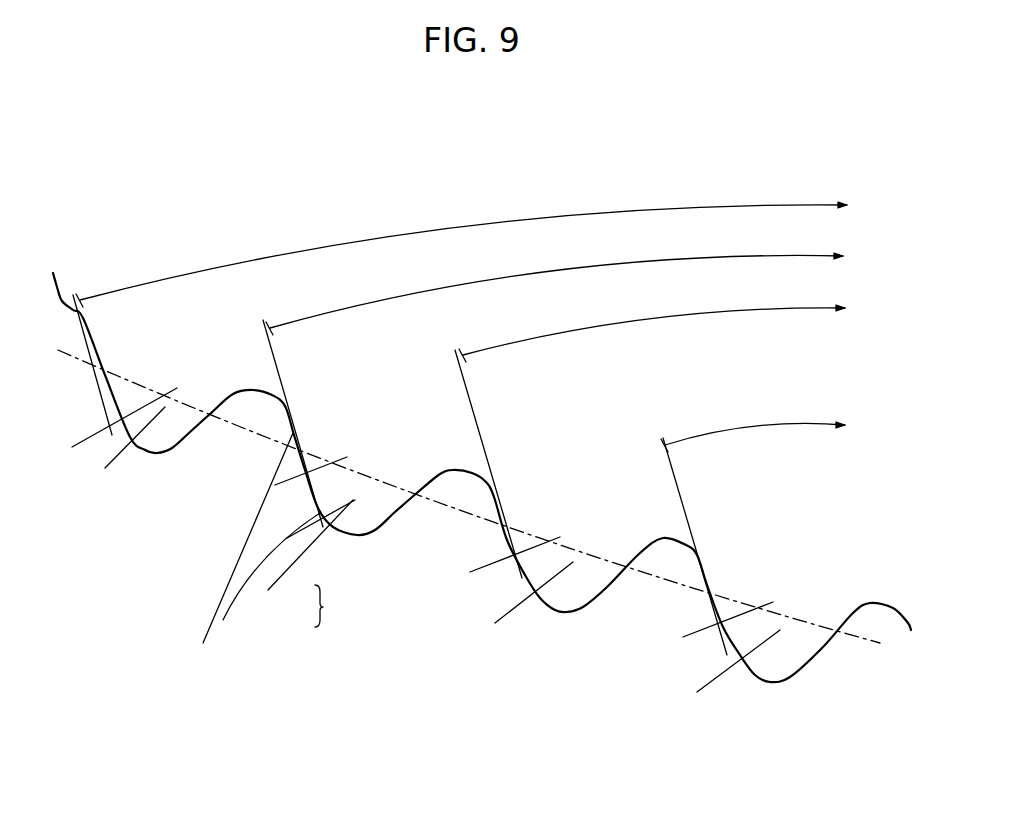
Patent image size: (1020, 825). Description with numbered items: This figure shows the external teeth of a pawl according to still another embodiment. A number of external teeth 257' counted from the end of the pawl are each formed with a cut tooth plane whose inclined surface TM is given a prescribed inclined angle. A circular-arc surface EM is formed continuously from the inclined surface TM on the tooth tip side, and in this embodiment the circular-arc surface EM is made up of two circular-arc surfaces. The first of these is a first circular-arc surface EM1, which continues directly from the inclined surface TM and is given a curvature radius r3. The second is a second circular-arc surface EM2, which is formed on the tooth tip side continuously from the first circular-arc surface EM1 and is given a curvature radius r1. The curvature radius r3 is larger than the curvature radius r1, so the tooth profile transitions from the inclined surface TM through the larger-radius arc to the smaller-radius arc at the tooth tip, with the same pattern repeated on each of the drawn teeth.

The external teeth 257' is at (169, 376).
The inclined surface TM is at (248, 548).
The first circular-arc surface EM1 is at (310, 553).
The second circular-arc surface EM2 is at (271, 575).
The circular-arc surface EM is at (335, 606).
The curvature radius of second circular-arc surface r1 is at (434, 549).
The curvature radius of first circular-arc surface r3 is at (421, 512).